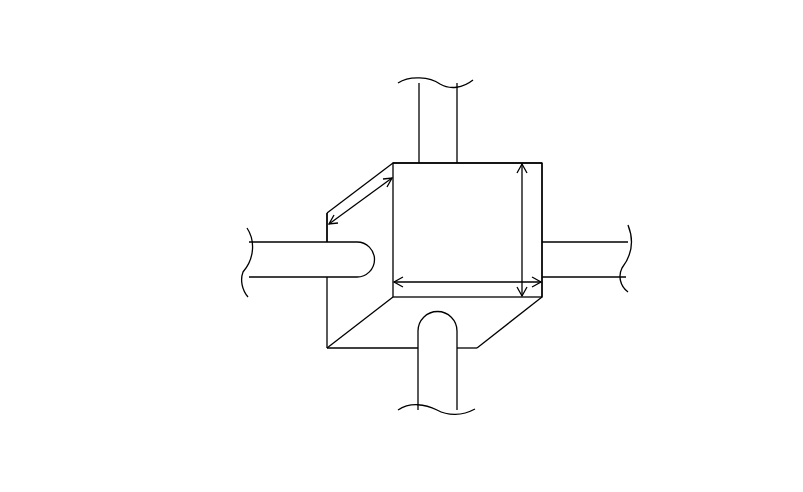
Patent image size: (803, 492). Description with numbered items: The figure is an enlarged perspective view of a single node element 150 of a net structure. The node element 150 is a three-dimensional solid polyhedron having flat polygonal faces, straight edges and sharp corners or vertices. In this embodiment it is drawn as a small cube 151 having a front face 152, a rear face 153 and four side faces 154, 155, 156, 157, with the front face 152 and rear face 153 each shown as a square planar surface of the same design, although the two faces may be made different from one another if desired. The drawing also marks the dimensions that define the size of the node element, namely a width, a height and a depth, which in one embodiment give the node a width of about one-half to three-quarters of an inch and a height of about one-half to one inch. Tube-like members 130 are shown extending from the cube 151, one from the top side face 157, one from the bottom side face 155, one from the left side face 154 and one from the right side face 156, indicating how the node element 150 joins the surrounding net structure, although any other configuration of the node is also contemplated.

The node element 150 is at (200, 117).
The tube 130 is at (442, 117).
The small cube 151 is at (413, 173).
The front face 152 is at (527, 187).
The rear face 153 is at (318, 216).
The side face 154 is at (340, 312).
The side face 155 is at (388, 325).
The side face 156 is at (543, 227).
The side face 157 is at (502, 161).